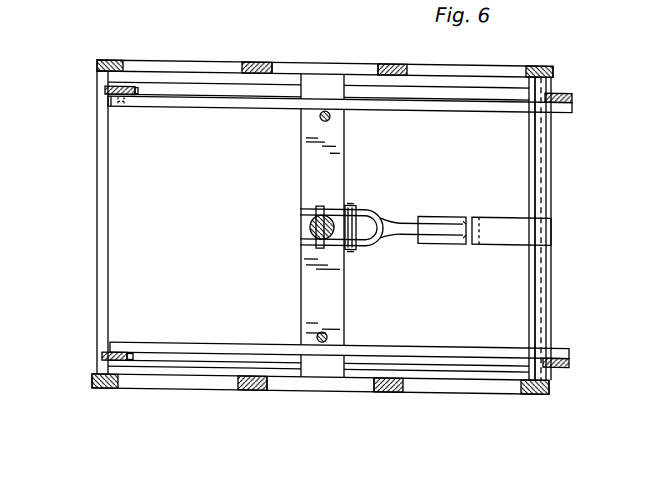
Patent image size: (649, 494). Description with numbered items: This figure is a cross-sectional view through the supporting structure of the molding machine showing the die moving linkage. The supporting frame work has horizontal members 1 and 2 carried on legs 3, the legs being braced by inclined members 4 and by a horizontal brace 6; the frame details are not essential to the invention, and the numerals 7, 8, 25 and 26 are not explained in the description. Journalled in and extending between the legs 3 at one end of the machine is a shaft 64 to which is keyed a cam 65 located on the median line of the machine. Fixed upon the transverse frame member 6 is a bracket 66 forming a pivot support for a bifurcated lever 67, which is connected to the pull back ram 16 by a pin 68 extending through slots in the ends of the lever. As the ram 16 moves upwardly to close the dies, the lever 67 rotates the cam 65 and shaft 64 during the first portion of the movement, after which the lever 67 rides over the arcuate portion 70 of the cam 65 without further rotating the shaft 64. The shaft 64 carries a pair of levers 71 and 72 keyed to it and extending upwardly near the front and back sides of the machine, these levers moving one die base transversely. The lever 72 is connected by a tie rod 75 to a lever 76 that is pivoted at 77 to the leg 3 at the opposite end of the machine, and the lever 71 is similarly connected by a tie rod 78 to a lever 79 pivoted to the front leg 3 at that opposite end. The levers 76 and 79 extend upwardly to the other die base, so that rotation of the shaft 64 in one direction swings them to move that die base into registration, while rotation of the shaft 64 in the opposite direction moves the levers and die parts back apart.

The horizontal member 1 is at (292, 0).
The horizontal member 2 is at (421, 78).
The leg 3 is at (96, 65).
The inclined member 4 is at (228, 66).
The horizontal brace 6 is at (337, 144).
The frame member 7 is at (22, 0).
The frame member 8 is at (74, 18).
The ram 16 is at (308, 233).
The bracket 25 is at (165, 0).
The bracket 26 is at (114, 0).
The shaft 64 is at (538, 187).
The cam 65 is at (510, 231).
The bracket 66 is at (356, 203).
The lever 67 is at (405, 216).
The pin 68 is at (317, 203).
The arcuate portion 70 is at (436, 235).
The lever 71 is at (570, 354).
The lever 72 is at (575, 91).
The tie rod 75 is at (428, 103).
The lever 76 is at (106, 91).
The pivot 77 is at (124, 103).
The tie rod 78 is at (416, 342).
The lever 79 is at (102, 358).